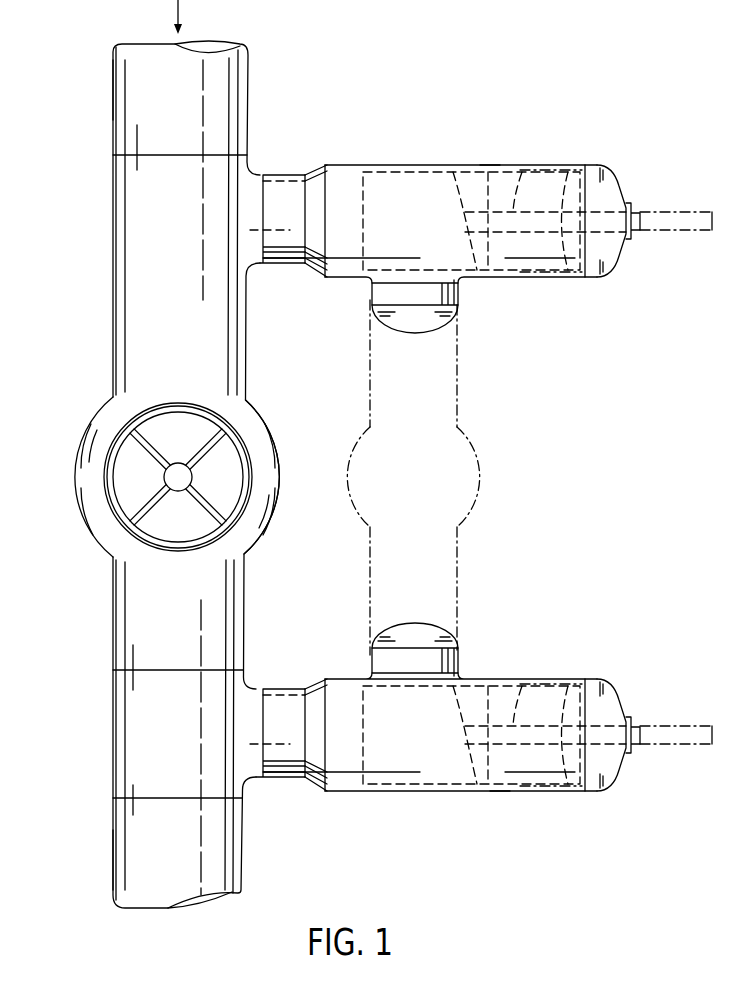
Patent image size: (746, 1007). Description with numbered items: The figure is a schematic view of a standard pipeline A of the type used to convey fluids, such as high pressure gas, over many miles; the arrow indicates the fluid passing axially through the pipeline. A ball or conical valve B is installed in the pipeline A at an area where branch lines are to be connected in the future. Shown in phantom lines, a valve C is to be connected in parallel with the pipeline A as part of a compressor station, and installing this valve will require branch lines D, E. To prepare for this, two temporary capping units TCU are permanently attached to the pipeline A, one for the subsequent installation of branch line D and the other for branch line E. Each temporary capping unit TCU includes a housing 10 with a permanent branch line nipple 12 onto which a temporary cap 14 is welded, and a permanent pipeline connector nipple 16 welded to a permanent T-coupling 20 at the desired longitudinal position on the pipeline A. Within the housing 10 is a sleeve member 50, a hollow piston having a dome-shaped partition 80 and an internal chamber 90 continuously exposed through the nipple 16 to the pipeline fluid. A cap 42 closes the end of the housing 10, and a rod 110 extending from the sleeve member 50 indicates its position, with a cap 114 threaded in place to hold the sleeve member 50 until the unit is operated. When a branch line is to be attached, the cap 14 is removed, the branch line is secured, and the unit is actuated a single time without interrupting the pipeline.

The housing 10 is at (398, 162).
The permanent branch line nipple 12 is at (459, 293).
The temporary cap 14 is at (436, 333).
The permanent pipeline connector nipple 16 is at (284, 180).
The permanent T-coupling 20 is at (125, 195).
The cap 42 is at (614, 183).
The sleeve member 50 is at (455, 177).
The dome-shaped partition 80 is at (466, 240).
The internal chamber 90 is at (378, 183).
The rod 110 is at (522, 172).
The cap 114 is at (634, 240).
The pipeline A is at (106, 93).
The ball or conical valve B is at (78, 428).
The valve C is at (485, 452).
The branch line D is at (466, 566).
The branch line E is at (467, 386).
The temporary capping unit TCU is at (491, 158).